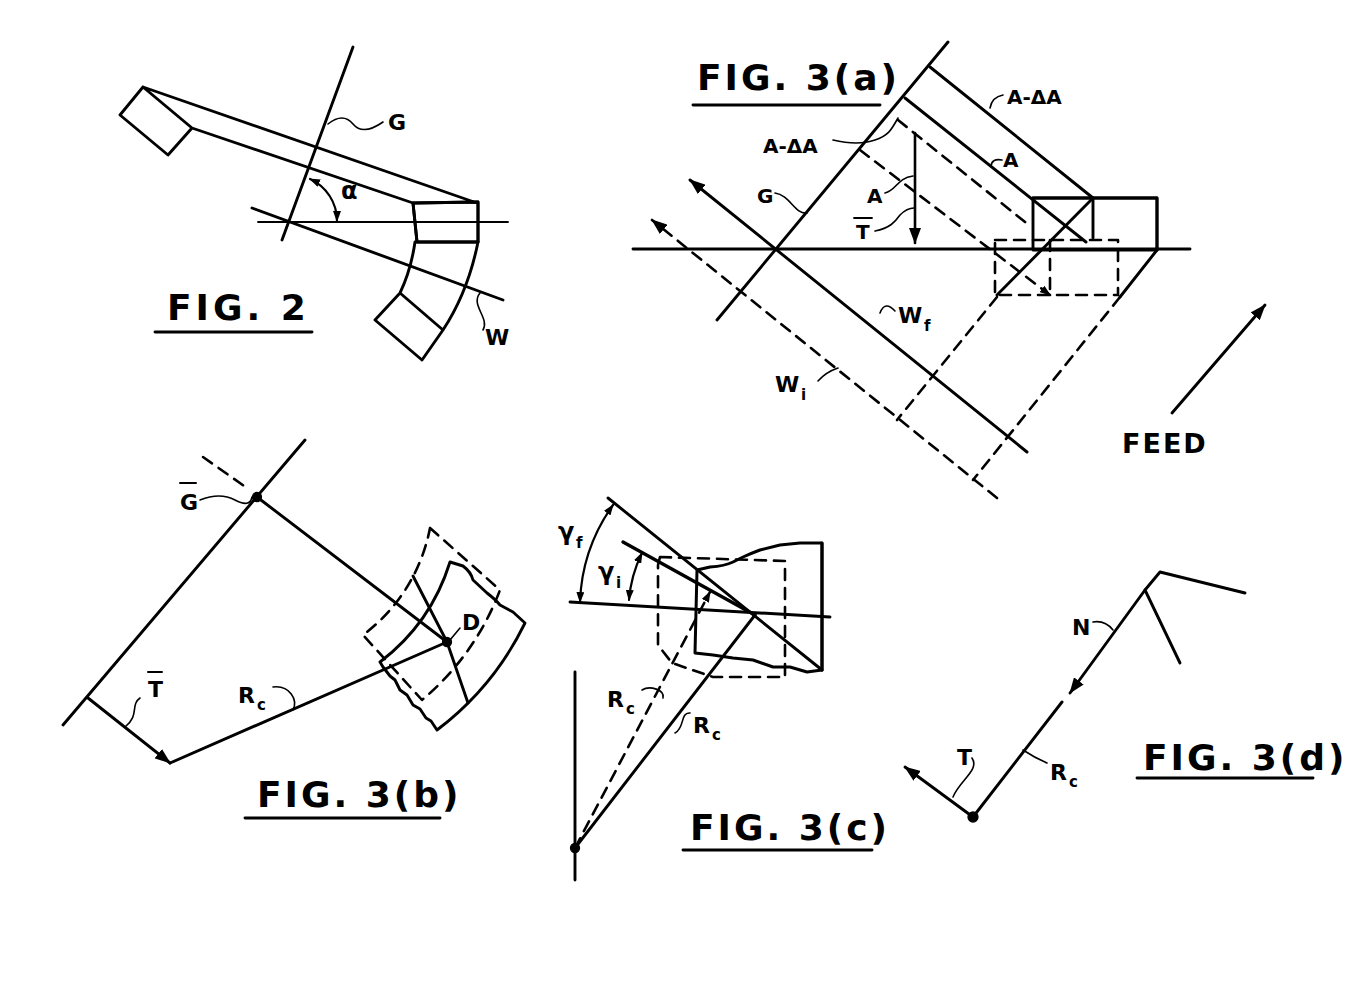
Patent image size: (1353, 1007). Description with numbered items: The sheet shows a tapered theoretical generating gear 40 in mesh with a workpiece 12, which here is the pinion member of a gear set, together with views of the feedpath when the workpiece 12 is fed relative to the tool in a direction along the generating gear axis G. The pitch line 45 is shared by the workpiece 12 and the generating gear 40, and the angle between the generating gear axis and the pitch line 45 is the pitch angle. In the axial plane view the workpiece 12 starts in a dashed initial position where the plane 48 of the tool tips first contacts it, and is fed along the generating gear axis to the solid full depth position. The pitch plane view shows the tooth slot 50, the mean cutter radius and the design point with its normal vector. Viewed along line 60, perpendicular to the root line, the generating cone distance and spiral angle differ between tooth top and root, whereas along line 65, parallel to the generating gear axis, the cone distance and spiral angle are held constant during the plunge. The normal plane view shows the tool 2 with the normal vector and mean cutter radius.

In FIG. 3D, the cutting tool 2 is at (1193, 600).
In FIG. 2, the workpiece 12 is at (437, 307).
In FIG. 3A, the workpiece 12 is at (1157, 222).
In FIG. 3B, the workpiece 12 is at (513, 607).
In FIG. 3C, the workpiece 12 is at (828, 647).
In FIG. 2, the theoretical generating gear 40 is at (233, 126).
In FIG. 2, the pitch line 45 is at (490, 220).
In FIG. 3A, the plane of the tips of the tool 48 is at (1173, 253).
In FIG. 3B, the tooth slot 50 is at (422, 590).
In FIG. 3C, the tooth slot 50 is at (808, 647).
In FIG. 3A, the line 60 is at (1097, 223).
In FIG. 3A, the line 65 is at (1080, 210).